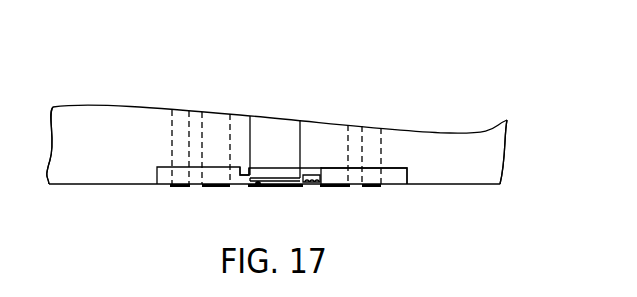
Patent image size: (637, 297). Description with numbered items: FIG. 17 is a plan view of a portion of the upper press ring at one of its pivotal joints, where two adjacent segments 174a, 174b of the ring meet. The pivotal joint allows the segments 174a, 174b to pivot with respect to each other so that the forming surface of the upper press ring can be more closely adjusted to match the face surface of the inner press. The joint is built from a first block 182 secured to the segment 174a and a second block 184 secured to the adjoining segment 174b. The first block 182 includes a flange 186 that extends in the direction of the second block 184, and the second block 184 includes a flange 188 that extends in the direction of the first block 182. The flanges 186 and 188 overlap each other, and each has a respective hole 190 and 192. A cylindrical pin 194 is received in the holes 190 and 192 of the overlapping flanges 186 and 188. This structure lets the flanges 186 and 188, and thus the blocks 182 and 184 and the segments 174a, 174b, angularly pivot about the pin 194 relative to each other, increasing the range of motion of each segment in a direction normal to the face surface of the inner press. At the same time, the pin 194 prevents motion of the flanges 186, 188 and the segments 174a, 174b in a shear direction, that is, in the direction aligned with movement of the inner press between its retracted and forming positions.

The segment 174a is at (103, 168).
The segment 174b is at (467, 168).
The first block 182 is at (163, 175).
The second block 184 is at (398, 178).
The flange 186 is at (256, 185).
The flange 188 is at (308, 172).
The hole 190 is at (275, 187).
The hole 192 is at (268, 167).
The cylindrical pin 194 is at (272, 130).